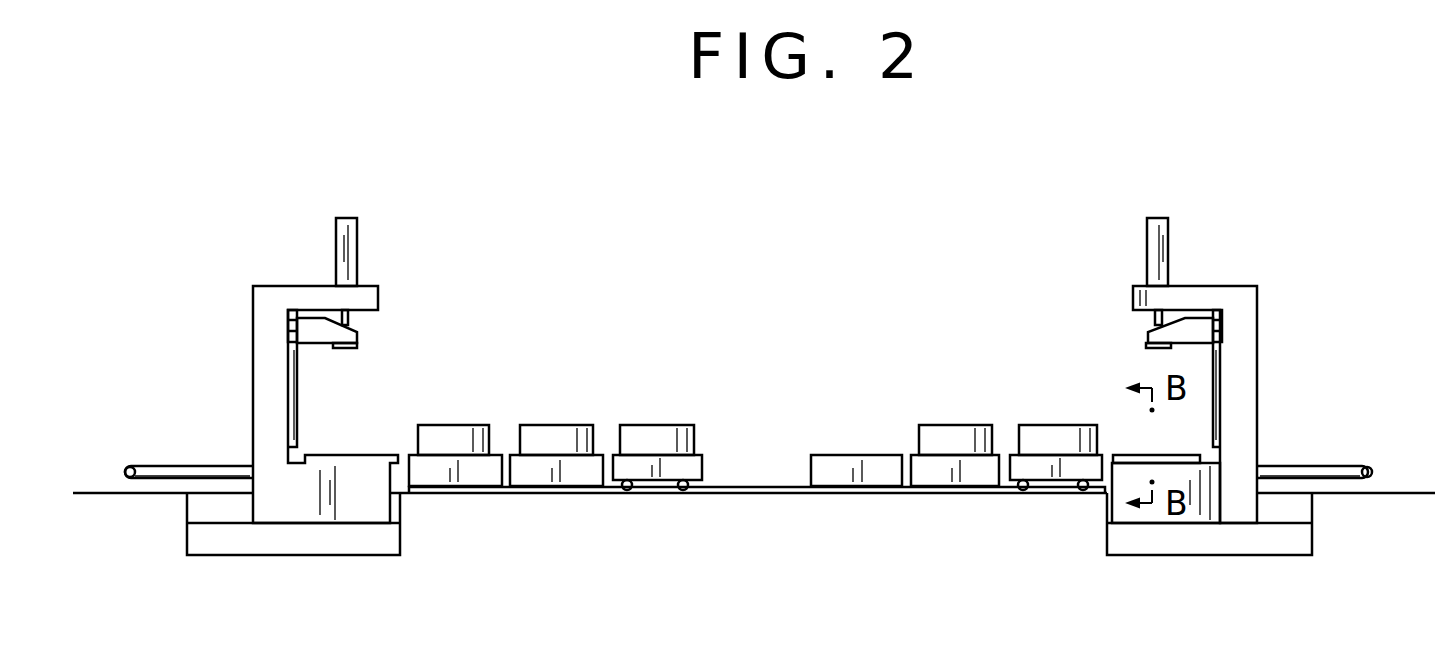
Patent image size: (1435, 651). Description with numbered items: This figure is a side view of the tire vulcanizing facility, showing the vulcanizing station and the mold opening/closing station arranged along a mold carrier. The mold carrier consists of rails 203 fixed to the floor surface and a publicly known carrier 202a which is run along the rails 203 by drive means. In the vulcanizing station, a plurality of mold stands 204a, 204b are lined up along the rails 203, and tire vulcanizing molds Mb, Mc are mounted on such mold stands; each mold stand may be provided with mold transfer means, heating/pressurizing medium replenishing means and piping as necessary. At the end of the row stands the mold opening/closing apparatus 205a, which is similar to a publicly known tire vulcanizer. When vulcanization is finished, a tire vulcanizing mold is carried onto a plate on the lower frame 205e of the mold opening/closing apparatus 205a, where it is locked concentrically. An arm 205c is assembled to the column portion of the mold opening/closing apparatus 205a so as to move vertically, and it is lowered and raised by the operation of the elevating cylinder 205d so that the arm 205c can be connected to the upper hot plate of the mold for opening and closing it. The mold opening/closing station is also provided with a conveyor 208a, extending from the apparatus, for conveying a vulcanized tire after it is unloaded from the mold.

The rails 203 is at (757, 485).
The mold stand 204a is at (835, 473).
The mold stand 204b is at (933, 473).
The carrier 202a is at (1038, 465).
The tire vulcanizing mold Mb is at (948, 425).
The tire vulcanizing mold Mc is at (1048, 425).
The mold opening/closing apparatus 205a is at (1237, 330).
The arm 205c is at (1143, 338).
The cylinder 205d is at (1152, 243).
The lower frame 205e is at (1125, 512).
The conveyor 208a is at (1308, 465).